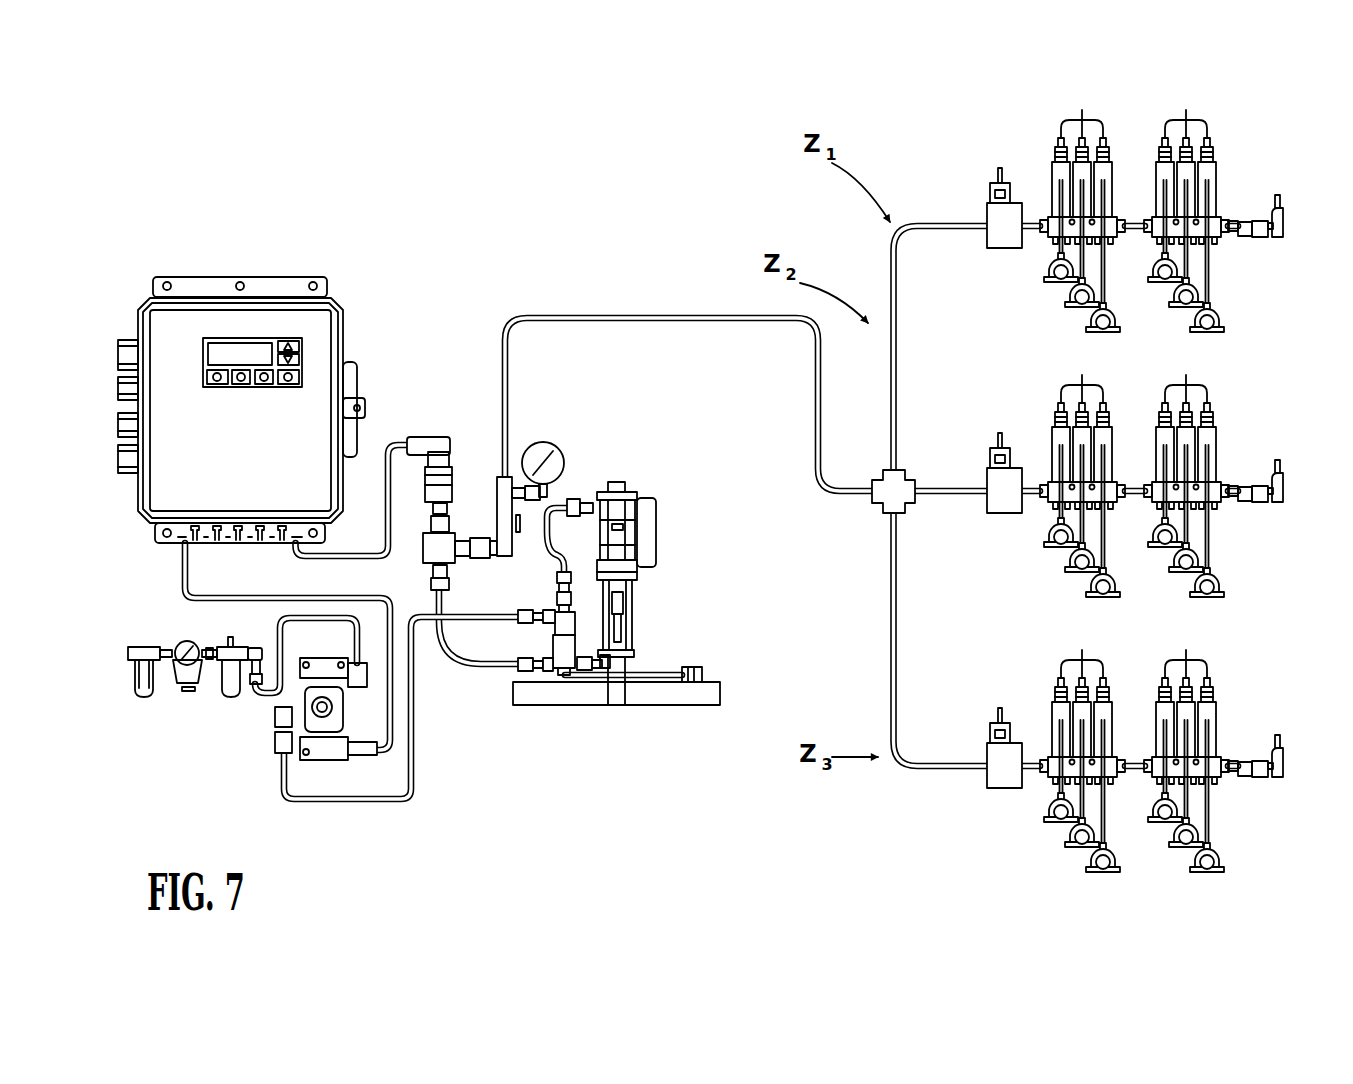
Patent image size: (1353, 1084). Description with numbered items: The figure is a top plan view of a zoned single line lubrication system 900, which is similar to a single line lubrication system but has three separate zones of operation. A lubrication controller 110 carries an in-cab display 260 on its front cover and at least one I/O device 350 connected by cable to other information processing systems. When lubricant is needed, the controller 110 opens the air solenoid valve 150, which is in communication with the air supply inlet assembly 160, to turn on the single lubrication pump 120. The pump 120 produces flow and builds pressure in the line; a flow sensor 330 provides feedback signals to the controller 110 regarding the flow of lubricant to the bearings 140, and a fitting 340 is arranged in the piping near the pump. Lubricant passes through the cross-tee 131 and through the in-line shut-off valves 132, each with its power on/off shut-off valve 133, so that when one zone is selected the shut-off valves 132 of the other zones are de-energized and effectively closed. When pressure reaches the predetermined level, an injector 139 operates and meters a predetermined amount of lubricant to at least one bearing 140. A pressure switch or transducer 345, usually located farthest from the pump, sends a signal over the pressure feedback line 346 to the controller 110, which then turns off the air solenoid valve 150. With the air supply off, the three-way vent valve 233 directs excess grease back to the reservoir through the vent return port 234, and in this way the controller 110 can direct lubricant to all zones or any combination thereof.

The lubrication controller 110 is at (245, 256).
The lubrication pump 120 is at (640, 532).
The cross-tee 131 is at (887, 488).
The shut-off valve 132 is at (968, 520).
The power on/off shut-off valve 133 is at (971, 433).
The injector 139 is at (1134, 459).
The bearing 140 is at (1140, 569).
The air solenoid valve 150 is at (282, 768).
The air supply inlet assembly 160 is at (167, 713).
The 3-way vent valve 233 is at (562, 664).
The vent return port 234 is at (696, 682).
The in-cab display 260 is at (274, 328).
The flow sensor 330 is at (423, 568).
The elbow fitting 340 is at (432, 436).
The pressure switch or transducer 345 is at (1273, 520).
The pressure feedback line 346 is at (1267, 458).
The I/O device 350 is at (167, 545).
The zoned single line lubrication system 900 is at (616, 250).